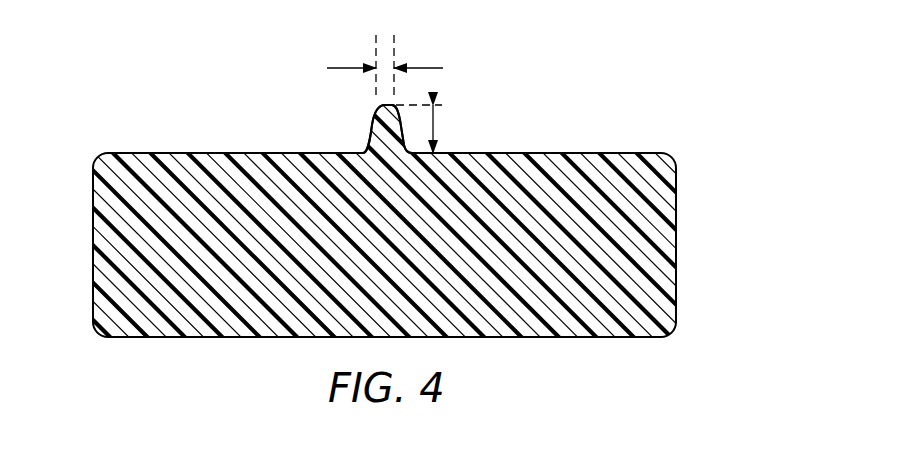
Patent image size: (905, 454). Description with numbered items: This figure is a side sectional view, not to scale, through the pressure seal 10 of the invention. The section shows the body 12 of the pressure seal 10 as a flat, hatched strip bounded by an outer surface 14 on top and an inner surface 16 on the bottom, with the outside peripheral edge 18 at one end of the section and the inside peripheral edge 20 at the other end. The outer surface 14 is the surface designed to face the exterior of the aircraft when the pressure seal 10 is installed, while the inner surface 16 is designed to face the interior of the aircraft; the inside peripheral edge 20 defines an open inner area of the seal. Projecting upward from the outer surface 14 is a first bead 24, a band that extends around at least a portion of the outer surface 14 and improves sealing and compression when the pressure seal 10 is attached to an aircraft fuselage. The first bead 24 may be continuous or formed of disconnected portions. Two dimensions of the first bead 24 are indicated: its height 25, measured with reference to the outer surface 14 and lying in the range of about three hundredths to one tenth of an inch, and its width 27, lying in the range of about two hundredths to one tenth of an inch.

The pressure seal 10 is at (441, 204).
The body 12 is at (540, 325).
The outer surface 14 is at (238, 153).
The inner surface 16 is at (254, 338).
The outside peripheral edge 18 is at (92, 242).
The inside peripheral edge 20 is at (680, 251).
The first bead 24 is at (371, 124).
The height 25 is at (435, 128).
The width 27 is at (343, 68).